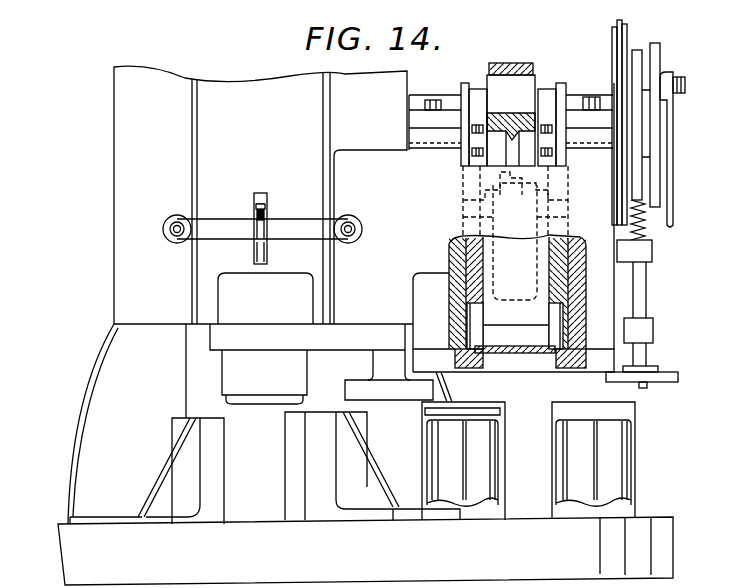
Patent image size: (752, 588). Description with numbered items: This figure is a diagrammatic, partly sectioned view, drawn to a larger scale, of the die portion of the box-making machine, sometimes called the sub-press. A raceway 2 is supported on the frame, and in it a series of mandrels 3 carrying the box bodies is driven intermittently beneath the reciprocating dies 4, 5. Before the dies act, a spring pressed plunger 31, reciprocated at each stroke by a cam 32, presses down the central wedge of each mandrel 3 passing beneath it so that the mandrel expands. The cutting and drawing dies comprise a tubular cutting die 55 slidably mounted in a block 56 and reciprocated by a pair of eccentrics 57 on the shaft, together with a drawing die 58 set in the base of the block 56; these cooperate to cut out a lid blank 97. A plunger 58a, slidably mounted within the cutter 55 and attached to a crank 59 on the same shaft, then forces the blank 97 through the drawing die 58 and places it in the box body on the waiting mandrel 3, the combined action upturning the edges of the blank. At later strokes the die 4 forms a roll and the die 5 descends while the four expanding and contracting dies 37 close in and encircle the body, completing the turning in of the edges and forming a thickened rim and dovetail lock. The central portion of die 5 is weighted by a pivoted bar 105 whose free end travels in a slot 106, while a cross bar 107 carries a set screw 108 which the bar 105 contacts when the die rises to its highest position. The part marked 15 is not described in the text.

The raceway 2 is at (365, 551).
The mandrel 3 is at (443, 457).
The die 4 is at (392, 386).
The die 5 is at (264, 377).
The column housing 15 is at (505, 452).
The spring pressed plunger 31 is at (640, 273).
The cam 32 is at (634, 60).
The expanding and contracting dies 37 is at (320, 444).
The tubular cutting die 55 is at (465, 255).
The block 56 is at (594, 290).
The eccentrics 57 is at (480, 101).
The drawing die 58 is at (552, 355).
The plunger 58a is at (515, 247).
The crank 59 is at (513, 100).
The blank 97 is at (497, 353).
The bar 105 is at (267, 255).
The slot 106 is at (255, 252).
The cross bar 107 is at (226, 231).
The set screw 108 is at (267, 208).